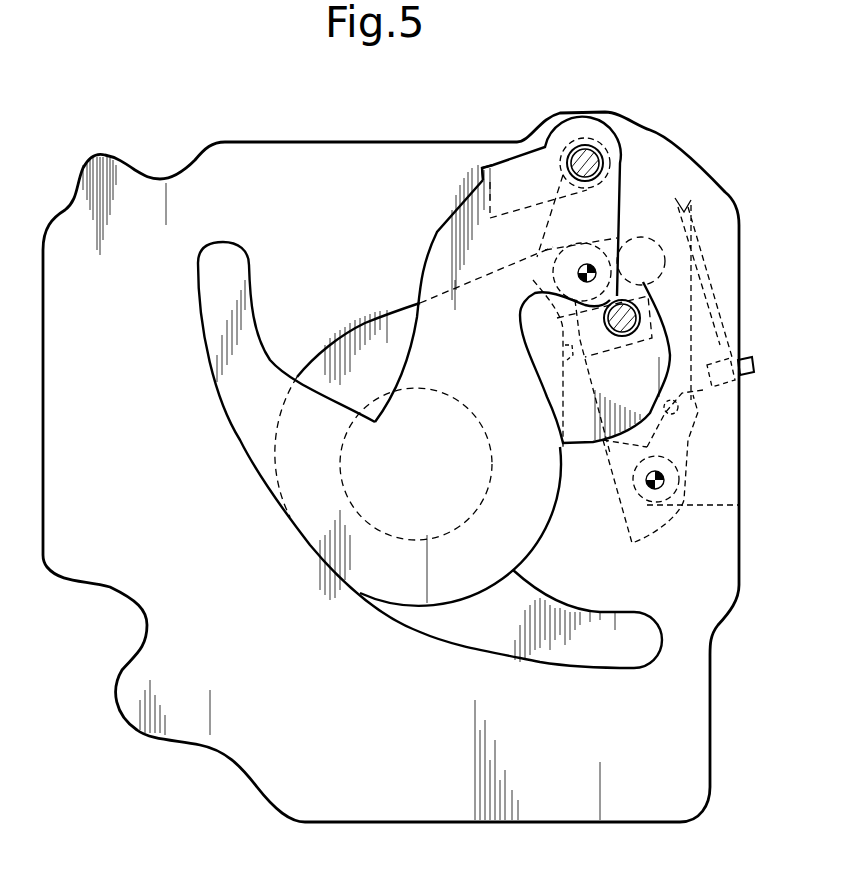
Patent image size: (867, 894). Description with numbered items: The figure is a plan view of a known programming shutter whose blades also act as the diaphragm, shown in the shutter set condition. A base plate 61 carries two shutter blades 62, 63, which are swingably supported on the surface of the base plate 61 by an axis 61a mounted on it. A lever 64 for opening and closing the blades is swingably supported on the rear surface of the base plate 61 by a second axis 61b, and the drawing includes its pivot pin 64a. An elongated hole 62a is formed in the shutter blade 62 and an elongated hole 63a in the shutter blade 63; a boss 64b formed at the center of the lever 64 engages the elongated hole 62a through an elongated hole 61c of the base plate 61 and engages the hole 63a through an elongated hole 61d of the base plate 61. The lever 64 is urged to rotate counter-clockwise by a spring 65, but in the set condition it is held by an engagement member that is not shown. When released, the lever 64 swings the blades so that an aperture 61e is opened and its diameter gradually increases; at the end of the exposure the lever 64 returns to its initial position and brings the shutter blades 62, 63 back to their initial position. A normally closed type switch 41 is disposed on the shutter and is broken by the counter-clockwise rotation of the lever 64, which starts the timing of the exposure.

The normally closed type switch 41 is at (700, 270).
The base plate 61 is at (712, 713).
The axis 61a is at (584, 270).
The axis 61b is at (646, 482).
The elongated hole 61c is at (487, 170).
The elongated hole 61d is at (570, 363).
The aperture 61e is at (380, 527).
The shutter blade 62 is at (533, 553).
The elongated hole 62a is at (585, 183).
The shutter blade 63 is at (455, 641).
The elongated hole 63a is at (607, 312).
The lever 64 is at (657, 513).
The pivot pin 64a is at (585, 145).
The boss 64b is at (626, 337).
The spring 65 is at (710, 503).